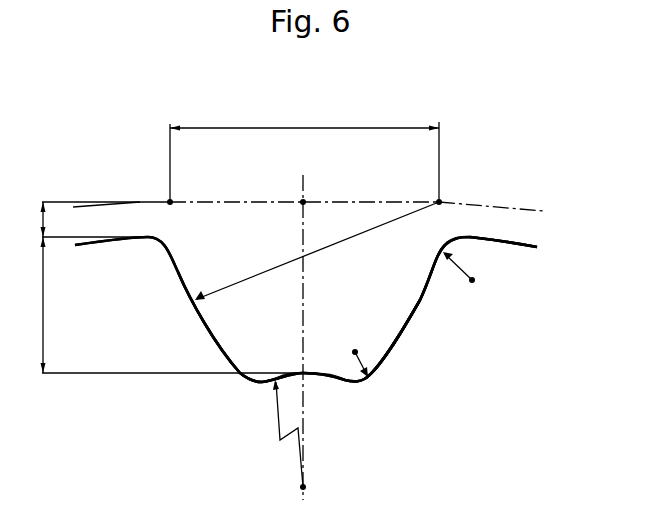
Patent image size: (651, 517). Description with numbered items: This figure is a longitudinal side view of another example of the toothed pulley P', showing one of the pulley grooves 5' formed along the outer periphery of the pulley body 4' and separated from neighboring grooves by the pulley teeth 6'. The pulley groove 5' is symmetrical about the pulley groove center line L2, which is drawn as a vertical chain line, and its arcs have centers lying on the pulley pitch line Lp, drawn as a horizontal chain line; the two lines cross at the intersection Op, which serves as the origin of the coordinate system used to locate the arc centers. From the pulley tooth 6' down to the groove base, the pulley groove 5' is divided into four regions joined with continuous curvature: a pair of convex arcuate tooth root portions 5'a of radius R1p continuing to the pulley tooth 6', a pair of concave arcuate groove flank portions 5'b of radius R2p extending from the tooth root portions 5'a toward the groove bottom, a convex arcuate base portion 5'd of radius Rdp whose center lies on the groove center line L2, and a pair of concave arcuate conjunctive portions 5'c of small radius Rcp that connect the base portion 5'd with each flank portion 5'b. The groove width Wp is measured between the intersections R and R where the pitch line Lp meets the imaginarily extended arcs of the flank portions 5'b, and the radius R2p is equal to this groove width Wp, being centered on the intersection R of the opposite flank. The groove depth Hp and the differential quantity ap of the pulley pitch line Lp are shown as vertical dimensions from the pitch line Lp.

The toothed pulley P' is at (306, 225).
The pulley body 4' is at (418, 321).
The pulley groove 5' is at (309, 309).
The tooth root portion 5'a is at (306, 231).
The groove flank portion 5'b is at (299, 325).
The conjunctive portion 5'c is at (303, 360).
The base portion 5'd is at (315, 339).
The pulley tooth 6' is at (520, 227).
The pulley pitch line Lp is at (522, 208).
The pulley groove center line L2 is at (305, 188).
The intersection Op is at (318, 213).
The intersection R is at (302, 191).
The groove width Wp is at (304, 153).
The groove depth Hp is at (167, 305).
The differential quantity of the pulley pitch line ap is at (94, 219).
The radius of tooth root portion R1p is at (472, 256).
The radius of groove flank portion R2p is at (317, 251).
The radius of conjunctive portion Rcp is at (376, 348).
The radius of groove innermost portion Rdp is at (295, 433).